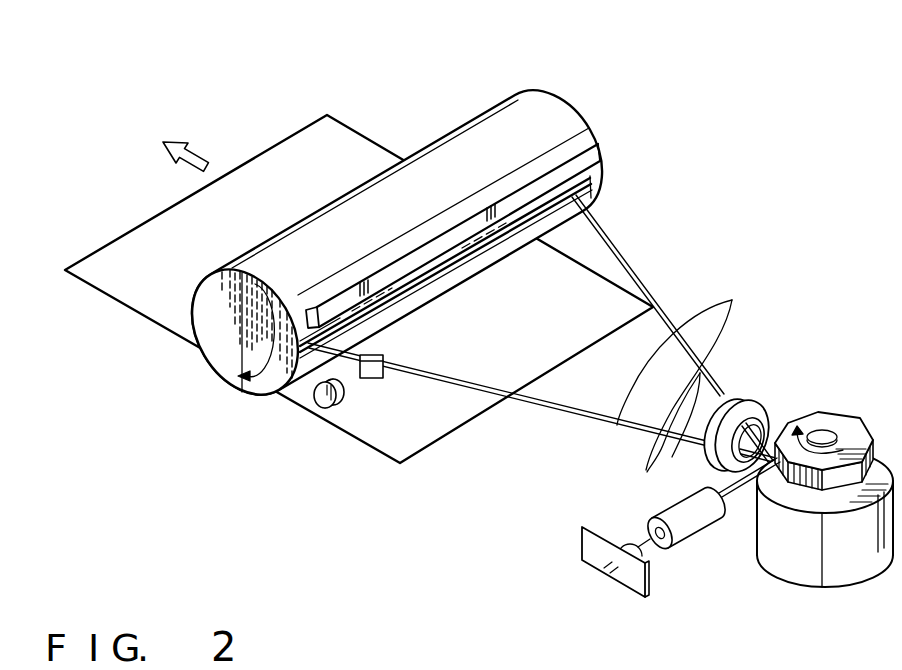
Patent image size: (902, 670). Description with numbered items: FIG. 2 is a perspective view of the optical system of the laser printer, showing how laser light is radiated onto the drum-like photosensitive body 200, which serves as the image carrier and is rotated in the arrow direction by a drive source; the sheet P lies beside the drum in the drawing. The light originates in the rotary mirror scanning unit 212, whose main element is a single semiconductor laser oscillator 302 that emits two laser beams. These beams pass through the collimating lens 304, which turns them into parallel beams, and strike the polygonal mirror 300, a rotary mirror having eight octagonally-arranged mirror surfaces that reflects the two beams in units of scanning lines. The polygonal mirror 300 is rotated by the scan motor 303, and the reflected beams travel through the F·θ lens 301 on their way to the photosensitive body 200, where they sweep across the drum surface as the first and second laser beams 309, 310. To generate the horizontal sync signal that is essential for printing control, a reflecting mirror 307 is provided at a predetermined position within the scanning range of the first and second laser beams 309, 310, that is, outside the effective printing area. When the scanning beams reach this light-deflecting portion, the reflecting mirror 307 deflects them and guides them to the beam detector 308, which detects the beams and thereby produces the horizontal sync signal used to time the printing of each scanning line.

The recording paper P is at (113, 300).
The photosensitive body 200 is at (568, 105).
The rotary mirror scanning unit 212 is at (848, 379).
The polygonal mirror 300 is at (818, 413).
The F·θ lens 301 is at (743, 400).
The semiconductor laser oscillator 302 is at (628, 598).
The scan motor 303 is at (826, 590).
The collimating lens 304 is at (703, 536).
The reflecting mirror 307 is at (377, 379).
The beam detector 308 is at (320, 410).
The first laser beam 309 is at (732, 300).
The second laser beam 310 is at (651, 444).